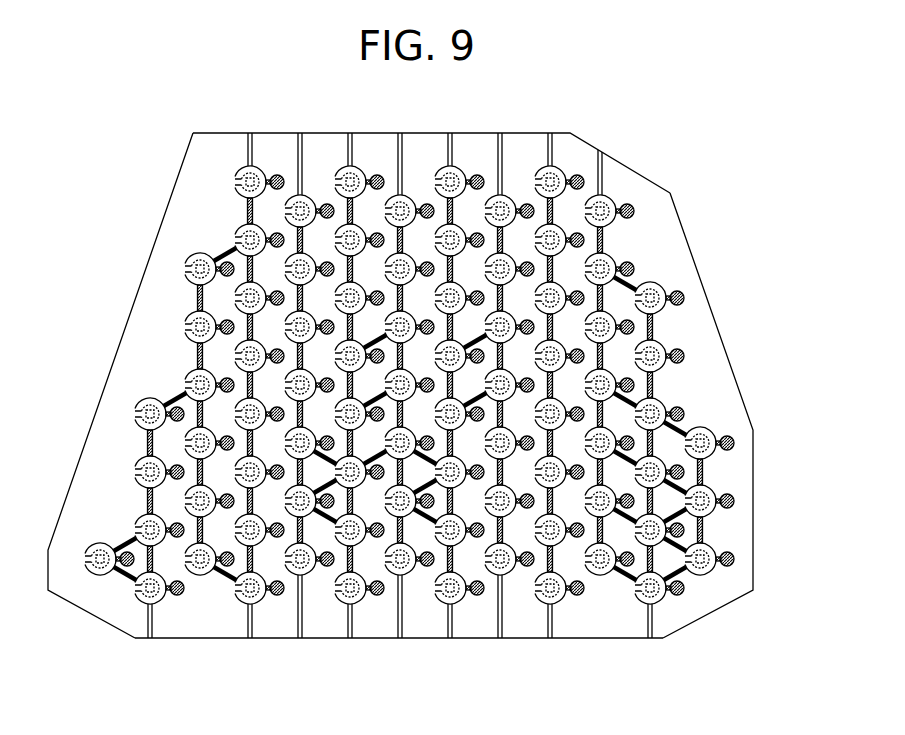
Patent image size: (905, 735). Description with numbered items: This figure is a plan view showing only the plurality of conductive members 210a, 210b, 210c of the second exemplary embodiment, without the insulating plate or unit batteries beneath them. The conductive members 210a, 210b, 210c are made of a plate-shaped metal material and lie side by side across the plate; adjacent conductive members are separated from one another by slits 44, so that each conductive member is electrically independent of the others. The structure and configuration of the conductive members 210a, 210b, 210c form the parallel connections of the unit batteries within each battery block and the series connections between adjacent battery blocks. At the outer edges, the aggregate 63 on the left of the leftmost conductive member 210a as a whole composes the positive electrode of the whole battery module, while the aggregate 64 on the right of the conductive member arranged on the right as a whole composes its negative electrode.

The conductive member 210a is at (234, 131).
The conductive member 210b is at (315, 131).
The conductive member 210c is at (380, 131).
The aggregate 63 is at (114, 354).
The aggregate 64 is at (738, 386).
The slit 44 is at (303, 651).